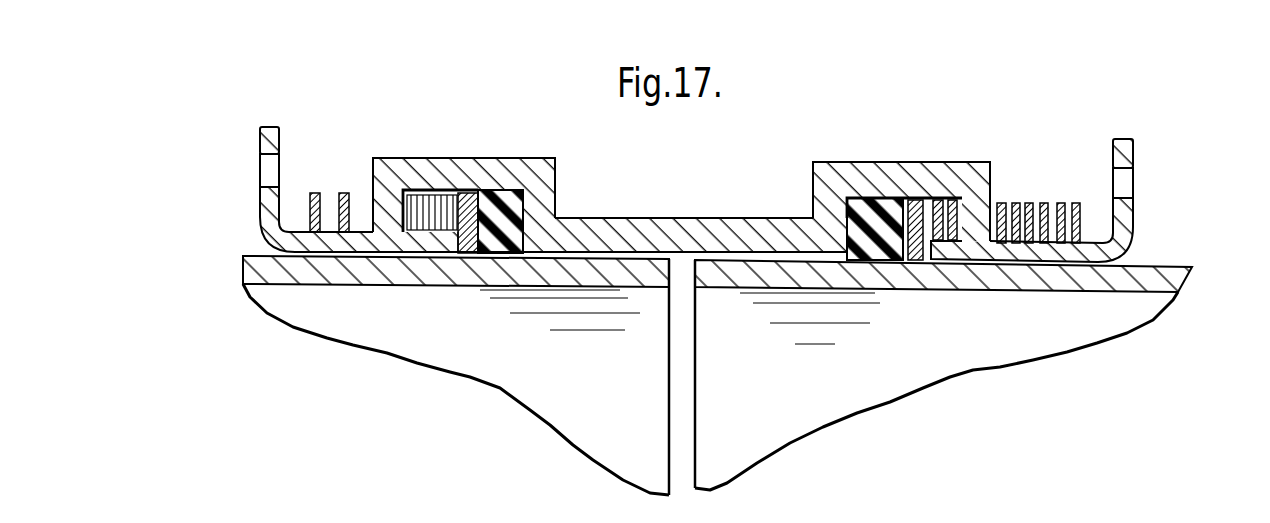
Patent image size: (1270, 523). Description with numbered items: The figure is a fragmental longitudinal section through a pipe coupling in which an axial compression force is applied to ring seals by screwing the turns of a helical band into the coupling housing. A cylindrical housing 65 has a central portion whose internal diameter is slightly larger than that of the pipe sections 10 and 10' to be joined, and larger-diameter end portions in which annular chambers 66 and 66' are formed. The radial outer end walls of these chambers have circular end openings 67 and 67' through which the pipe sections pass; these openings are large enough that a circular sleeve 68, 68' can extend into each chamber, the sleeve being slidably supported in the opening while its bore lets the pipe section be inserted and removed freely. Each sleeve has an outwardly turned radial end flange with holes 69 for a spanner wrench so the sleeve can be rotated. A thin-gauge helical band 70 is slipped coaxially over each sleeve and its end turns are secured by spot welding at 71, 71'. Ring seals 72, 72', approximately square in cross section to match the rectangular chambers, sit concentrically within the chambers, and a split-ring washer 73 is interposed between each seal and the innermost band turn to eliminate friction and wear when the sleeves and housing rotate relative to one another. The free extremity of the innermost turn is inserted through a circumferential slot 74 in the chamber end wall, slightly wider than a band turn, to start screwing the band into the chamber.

The pipe section 10 is at (433, 355).
The pipe section 10' is at (949, 351).
The cylindrical housing 65 is at (637, 222).
The annular chamber 66 is at (464, 178).
The annular chamber 66' is at (901, 173).
The circular end opening 67 is at (465, 252).
The circular end opening 67' is at (1032, 258).
The circular sleeve 68 is at (236, 140).
The circular sleeve 68' is at (1156, 154).
The holes 69 is at (270, 160).
The helical band 70 is at (440, 194).
The spot weld 71 is at (380, 231).
The spot weld 71' is at (1024, 231).
The ring seal 72 is at (509, 179).
The ring seal 72' is at (878, 182).
The split-ring washer 73 is at (466, 195).
The circumferential slot 74 is at (395, 188).